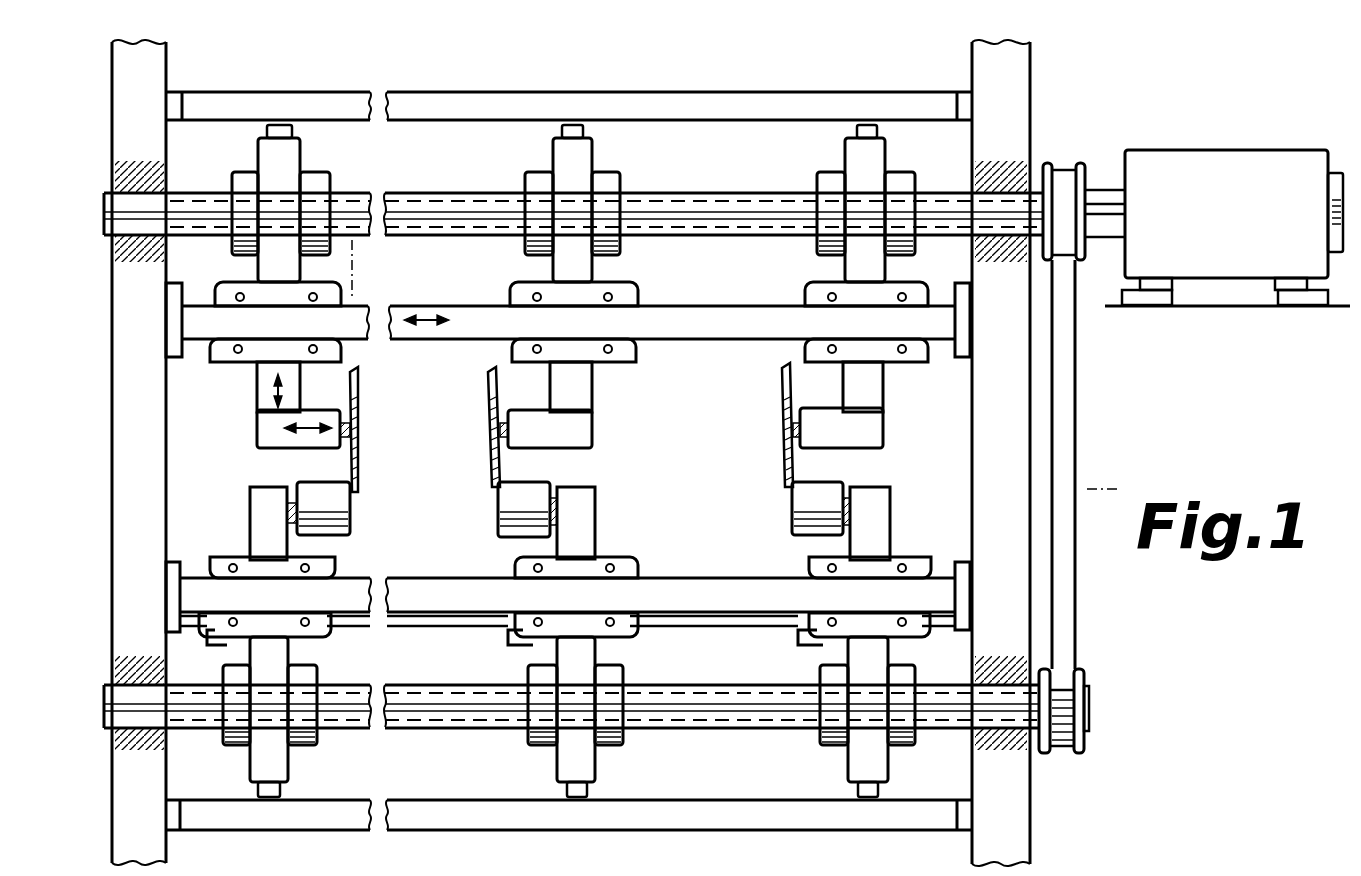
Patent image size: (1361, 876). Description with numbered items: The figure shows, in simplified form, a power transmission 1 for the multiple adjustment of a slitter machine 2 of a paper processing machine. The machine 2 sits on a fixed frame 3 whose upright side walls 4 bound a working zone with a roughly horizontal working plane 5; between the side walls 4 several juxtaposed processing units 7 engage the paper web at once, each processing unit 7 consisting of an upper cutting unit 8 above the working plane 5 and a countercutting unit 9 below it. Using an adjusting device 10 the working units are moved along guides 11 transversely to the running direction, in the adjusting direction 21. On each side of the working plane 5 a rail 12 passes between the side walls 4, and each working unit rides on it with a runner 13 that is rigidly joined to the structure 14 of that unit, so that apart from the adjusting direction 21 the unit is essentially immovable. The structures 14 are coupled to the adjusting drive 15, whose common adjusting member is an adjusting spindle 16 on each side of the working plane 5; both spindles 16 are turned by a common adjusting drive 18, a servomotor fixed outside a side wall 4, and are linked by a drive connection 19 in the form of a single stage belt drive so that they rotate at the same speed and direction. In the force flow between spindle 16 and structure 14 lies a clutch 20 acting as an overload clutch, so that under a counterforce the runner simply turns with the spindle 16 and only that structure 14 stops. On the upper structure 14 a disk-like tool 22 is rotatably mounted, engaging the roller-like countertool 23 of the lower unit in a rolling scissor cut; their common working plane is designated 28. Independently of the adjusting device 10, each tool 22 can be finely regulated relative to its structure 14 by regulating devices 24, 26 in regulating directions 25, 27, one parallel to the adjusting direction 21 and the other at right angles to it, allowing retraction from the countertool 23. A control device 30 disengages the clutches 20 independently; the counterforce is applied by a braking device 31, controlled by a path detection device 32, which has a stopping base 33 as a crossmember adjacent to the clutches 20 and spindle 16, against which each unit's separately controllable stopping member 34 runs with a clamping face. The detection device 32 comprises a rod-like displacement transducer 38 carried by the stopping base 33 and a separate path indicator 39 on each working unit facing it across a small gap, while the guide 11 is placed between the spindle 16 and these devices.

The power transmission 1 is at (718, 146).
The machine 2 is at (1119, 66).
The fixed frame 3 is at (92, 560).
The side wall 4 is at (112, 432).
The working plane 5 is at (1115, 489).
The processing unit 7 is at (244, 468).
The upper cutting unit 8 is at (377, 348).
The countercutting unit 9 is at (348, 557).
The adjusting device 10 is at (1106, 136).
The guide 11 is at (652, 351).
The rail 12 is at (726, 340).
The runner 13 is at (628, 296).
The structure 14 is at (563, 238).
The adjusting drive 15 is at (920, 180).
The adjusting spindle 16 is at (742, 200).
The common adjusting drive 18 is at (1270, 162).
The drive connection 19 is at (1077, 385).
The clutch 20 is at (614, 187).
The adjusting direction 21 is at (331, 320).
The tool 22 is at (359, 452).
The countertool 23 is at (346, 504).
The regulating device 24 is at (266, 438).
The regulating direction 25 is at (307, 432).
The regulating device 26 is at (257, 392).
The regulating direction 27 is at (298, 382).
The working plane of tools 28 is at (355, 268).
The control device 30 is at (582, 76).
The braking device 31 is at (522, 129).
The path detection device 32 is at (490, 638).
The stopping base 33 is at (710, 94).
The stopping member 34 is at (584, 128).
The displacement transducer 38 is at (346, 622).
The path indicator 39 is at (522, 644).